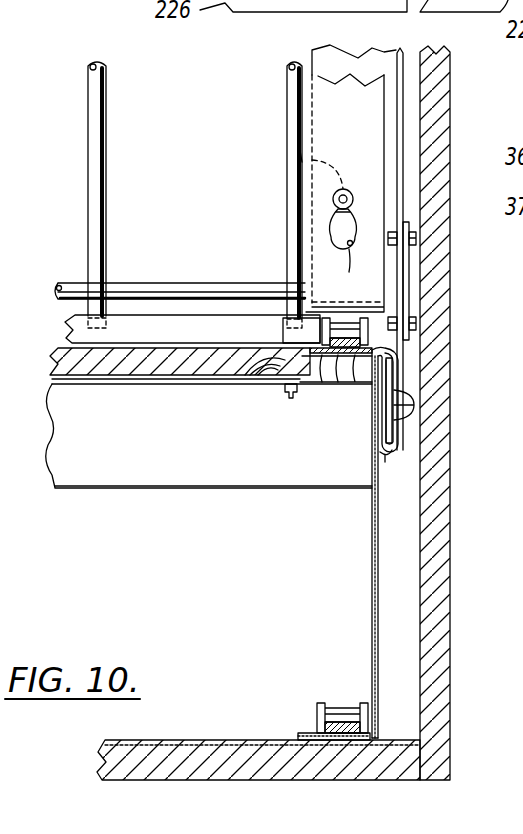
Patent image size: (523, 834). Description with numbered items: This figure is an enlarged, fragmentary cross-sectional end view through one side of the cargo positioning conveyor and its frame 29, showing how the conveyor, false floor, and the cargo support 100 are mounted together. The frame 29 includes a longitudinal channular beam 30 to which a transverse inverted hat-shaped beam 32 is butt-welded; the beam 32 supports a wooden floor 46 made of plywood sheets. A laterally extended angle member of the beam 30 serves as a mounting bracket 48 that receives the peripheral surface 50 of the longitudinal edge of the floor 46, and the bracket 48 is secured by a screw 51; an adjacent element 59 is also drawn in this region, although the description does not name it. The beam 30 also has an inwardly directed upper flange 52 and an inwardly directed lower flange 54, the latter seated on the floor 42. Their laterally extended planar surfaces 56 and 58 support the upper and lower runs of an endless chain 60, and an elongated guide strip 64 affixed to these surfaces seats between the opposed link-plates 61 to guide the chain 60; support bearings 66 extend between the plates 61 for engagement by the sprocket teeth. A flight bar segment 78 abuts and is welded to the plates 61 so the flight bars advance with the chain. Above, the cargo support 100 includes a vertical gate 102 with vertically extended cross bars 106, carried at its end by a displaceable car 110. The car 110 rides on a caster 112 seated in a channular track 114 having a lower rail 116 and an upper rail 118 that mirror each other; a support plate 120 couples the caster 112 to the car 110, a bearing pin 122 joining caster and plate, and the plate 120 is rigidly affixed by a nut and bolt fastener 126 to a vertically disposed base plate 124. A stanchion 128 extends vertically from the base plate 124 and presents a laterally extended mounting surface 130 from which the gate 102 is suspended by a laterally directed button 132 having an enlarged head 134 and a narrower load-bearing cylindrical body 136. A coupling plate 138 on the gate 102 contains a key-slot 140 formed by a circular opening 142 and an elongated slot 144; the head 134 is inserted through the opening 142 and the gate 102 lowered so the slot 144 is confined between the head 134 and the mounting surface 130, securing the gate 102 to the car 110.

The frame 29 is at (362, 598).
The longitudinal channular beam 30 is at (372, 540).
The inverted hat-shaped beam 32 is at (190, 468).
The floor 42 is at (188, 740).
The wooden floor 46 is at (82, 366).
The mounting bracket 48 is at (330, 372).
The peripheral surface 50 is at (260, 376).
The screw 51 is at (272, 350).
The upper flange 52 is at (335, 378).
The lower flange 54 is at (310, 738).
The planar surface 56 is at (282, 333).
The planar surface 58 is at (316, 733).
The cam 59 is at (235, 372).
The endless chain 60 is at (400, 354).
The link-plate 61 is at (318, 704).
The guide strip 64 is at (356, 372).
The support bearing 66 is at (348, 327).
The flight bar segment 78 is at (137, 328).
The cargo support 100 is at (94, 192).
The vertical gate 102 is at (300, 122).
The cross bar 106 is at (104, 172).
The car 110 is at (441, 280).
The caster 112 is at (395, 428).
The channular track 114 is at (386, 452).
The lower rail 116 is at (385, 455).
The upper rail 118 is at (396, 366).
The support plate 120 is at (405, 292).
The bearing pin 122 is at (412, 400).
The base plate 124 is at (400, 133).
The nut and bolt fastener 126 is at (413, 238).
The stanchion 128 is at (296, 64).
The mounting surface 130 is at (300, 97).
The button 132 is at (332, 200).
The head 134 is at (335, 190).
The cylindrical body 136 is at (300, 157).
The coupling plate 138 is at (370, 158).
The key-slot 140 is at (340, 232).
The circular opening 142 is at (346, 272).
The elongated slot 144 is at (338, 218).